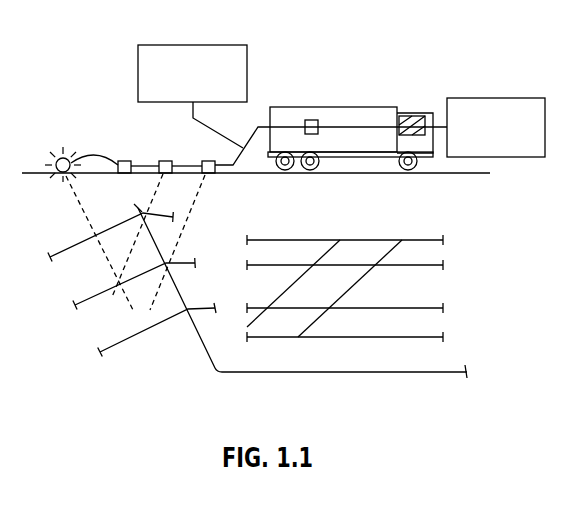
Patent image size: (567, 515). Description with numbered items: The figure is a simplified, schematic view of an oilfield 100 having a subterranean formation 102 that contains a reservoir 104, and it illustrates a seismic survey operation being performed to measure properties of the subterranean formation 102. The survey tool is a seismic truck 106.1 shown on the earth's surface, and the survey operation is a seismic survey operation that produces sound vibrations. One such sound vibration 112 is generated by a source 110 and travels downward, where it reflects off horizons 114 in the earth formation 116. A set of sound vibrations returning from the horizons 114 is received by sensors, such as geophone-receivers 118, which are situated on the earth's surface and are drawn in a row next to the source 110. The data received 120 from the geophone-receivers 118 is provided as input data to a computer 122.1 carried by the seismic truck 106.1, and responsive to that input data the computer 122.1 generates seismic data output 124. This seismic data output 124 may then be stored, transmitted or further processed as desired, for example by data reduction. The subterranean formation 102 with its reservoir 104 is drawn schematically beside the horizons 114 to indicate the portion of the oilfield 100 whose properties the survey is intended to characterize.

The oilfield 100 is at (459, 68).
The subterranean formation 102 is at (433, 219).
The reservoir 104 is at (415, 298).
The seismic truck 106.1 is at (372, 107).
The source 110 is at (53, 157).
The sound vibration 112 is at (105, 207).
The horizons 114 is at (62, 252).
The earth formation 116 is at (200, 338).
The geophone-receivers 118 is at (206, 161).
The data received 120 is at (166, 45).
The computer 122.1 is at (310, 120).
The seismic data output 124 is at (525, 98).